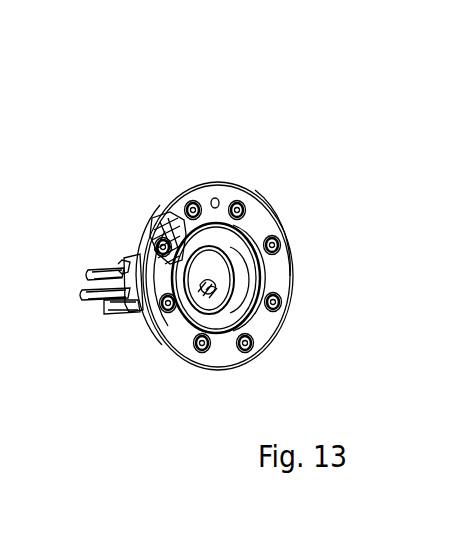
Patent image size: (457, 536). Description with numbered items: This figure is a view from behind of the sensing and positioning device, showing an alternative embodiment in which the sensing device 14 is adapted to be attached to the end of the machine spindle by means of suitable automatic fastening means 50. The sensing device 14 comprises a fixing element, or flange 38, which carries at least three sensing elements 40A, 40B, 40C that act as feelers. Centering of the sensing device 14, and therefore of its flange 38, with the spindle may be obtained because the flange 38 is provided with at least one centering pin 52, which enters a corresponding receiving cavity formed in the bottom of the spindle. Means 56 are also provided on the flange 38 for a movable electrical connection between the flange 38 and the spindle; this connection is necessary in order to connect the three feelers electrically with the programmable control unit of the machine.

The sensing device 14 is at (290, 352).
The fixing element 38 is at (273, 223).
The sensing element 40A is at (117, 262).
The sensing element 40B is at (82, 288).
The sensing element 40C is at (112, 305).
The automatic fastening means 50 is at (223, 365).
The centering pin 52 is at (186, 205).
The means for movable electrical connection 56 is at (165, 225).